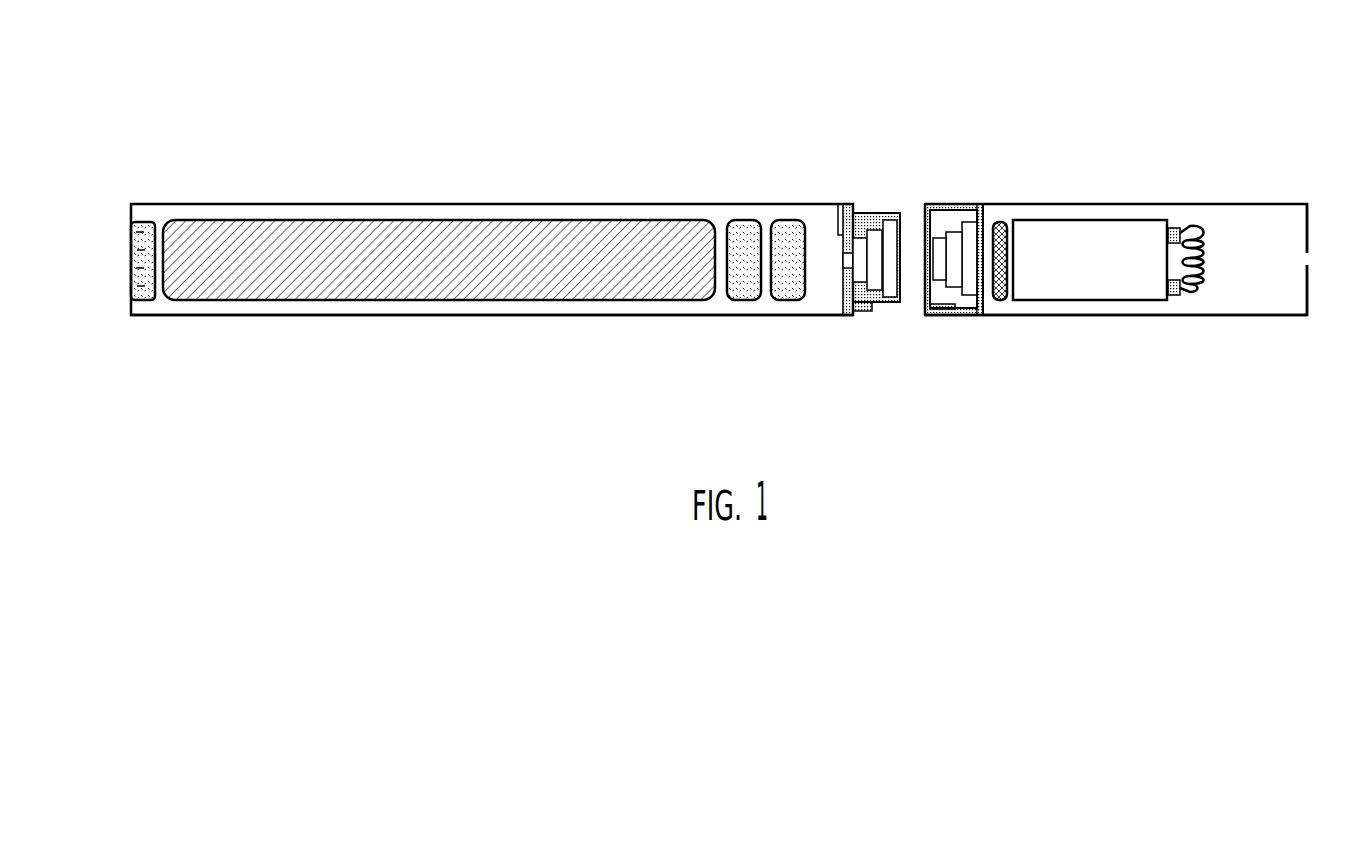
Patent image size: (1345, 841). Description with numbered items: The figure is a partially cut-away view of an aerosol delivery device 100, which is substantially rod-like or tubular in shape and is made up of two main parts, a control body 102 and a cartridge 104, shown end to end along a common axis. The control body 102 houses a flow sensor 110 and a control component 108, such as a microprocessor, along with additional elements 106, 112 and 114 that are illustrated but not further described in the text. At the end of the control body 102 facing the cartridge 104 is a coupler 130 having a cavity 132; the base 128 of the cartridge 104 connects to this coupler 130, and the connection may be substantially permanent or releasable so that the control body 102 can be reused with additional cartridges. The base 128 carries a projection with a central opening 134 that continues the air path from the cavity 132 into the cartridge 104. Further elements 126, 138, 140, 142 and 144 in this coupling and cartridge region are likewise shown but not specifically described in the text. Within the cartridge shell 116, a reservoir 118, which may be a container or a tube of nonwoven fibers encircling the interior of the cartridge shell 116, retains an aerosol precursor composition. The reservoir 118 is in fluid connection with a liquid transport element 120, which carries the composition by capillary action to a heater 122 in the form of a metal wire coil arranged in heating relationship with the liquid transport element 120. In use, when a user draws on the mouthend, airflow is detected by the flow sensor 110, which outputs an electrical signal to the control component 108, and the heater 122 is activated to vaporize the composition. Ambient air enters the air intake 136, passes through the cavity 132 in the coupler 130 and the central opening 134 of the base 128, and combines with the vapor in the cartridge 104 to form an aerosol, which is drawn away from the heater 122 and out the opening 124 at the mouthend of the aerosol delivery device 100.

The aerosol delivery device 100 is at (222, 92).
The control body 102 is at (203, 165).
The cartridge 104 is at (1130, 170).
The housing body 106 is at (267, 315).
The control component 108 is at (744, 222).
The flow sensor 110 is at (790, 300).
The circuit board 112 is at (412, 300).
The end cap 114 is at (142, 300).
The cartridge shell 116 is at (1075, 315).
The reservoir 118 is at (1113, 300).
The liquid transport element 120 is at (1190, 290).
The heater 122 is at (1205, 278).
The opening 124 is at (1305, 255).
The seal 126 is at (1000, 300).
The base 128 is at (985, 315).
The coupler 130 is at (880, 307).
The cavity 132 is at (874, 230).
The central opening 134 is at (957, 224).
The air intake 136 is at (842, 237).
The plug tip 138 is at (886, 220).
The receptacle 140 is at (949, 224).
The latch 142 is at (862, 312).
The latch recess 144 is at (945, 315).